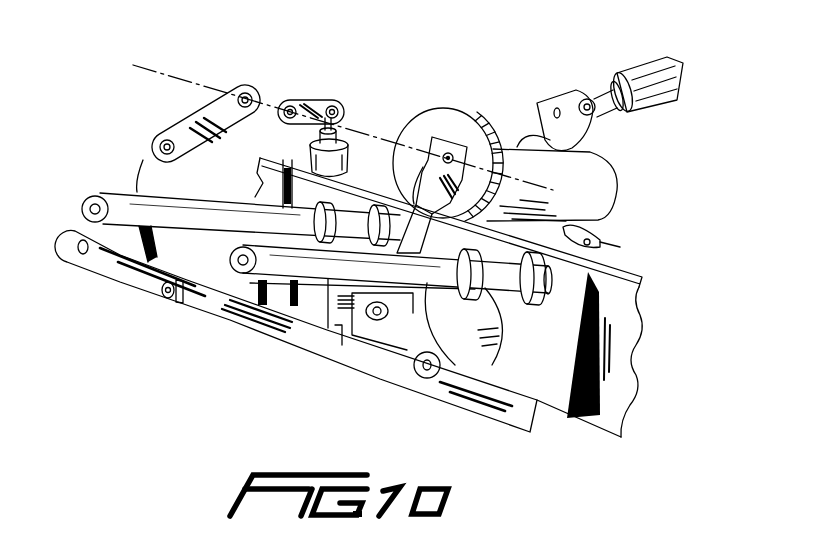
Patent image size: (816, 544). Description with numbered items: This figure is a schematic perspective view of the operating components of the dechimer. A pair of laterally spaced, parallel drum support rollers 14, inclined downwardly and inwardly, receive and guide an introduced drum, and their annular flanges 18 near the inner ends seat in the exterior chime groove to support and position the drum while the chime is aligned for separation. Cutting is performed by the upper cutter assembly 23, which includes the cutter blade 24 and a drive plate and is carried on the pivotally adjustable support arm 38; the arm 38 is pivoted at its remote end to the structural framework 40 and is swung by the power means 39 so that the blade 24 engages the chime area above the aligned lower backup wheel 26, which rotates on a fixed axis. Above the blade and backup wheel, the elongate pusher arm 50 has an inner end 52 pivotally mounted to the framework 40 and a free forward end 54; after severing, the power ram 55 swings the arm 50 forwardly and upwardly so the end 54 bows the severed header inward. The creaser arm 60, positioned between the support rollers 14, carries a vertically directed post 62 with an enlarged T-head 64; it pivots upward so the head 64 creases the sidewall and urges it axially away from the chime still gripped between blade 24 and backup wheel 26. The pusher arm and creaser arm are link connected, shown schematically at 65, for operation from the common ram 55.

The drum support rollers 14 is at (192, 237).
The annular flanges 18 is at (262, 195).
The upper cutter assembly 23 is at (458, 103).
The cutter blade 24 is at (423, 125).
The lower backup wheel 26 is at (392, 378).
The support arm 38 is at (600, 183).
The power means 39 is at (677, 83).
The structural framework 40 is at (620, 308).
The pusher arm 50 is at (408, 182).
The inner end 52 is at (460, 145).
The free forward end 54 is at (387, 177).
The power ram 55 is at (316, 152).
The creaser arm 60 is at (318, 307).
The post 62 is at (342, 332).
The T-head 64 is at (400, 327).
The link connection 65 is at (185, 118).